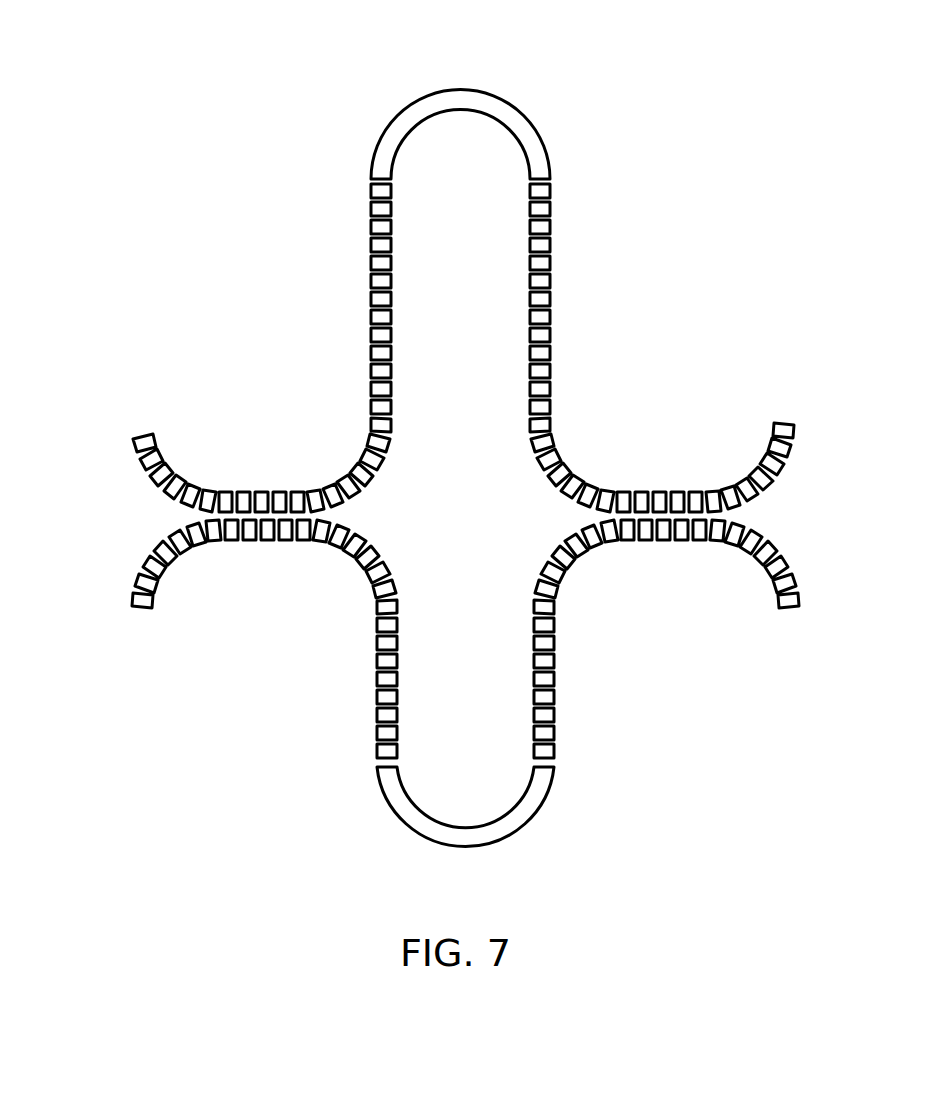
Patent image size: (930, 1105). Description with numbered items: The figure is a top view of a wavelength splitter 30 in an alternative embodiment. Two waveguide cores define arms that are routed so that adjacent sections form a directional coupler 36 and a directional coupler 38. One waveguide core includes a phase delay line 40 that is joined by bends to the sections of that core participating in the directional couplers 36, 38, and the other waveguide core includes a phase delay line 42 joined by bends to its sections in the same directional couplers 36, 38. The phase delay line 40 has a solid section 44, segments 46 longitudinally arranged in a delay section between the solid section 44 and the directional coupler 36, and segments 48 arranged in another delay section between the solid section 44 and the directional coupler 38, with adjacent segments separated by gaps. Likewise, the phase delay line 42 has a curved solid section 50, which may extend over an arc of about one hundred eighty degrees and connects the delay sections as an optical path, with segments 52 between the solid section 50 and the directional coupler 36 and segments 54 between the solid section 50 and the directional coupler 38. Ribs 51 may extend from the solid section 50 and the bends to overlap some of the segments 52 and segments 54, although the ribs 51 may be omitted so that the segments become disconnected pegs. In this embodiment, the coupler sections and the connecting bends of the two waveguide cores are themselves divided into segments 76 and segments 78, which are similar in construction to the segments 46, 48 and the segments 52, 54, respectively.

The wavelength splitter 30 is at (128, 92).
The phase delay line 40 is at (322, 202).
The solid section 44 is at (388, 147).
The segments 46 is at (385, 275).
The segments 48 is at (548, 275).
The directional coupler 36 is at (253, 468).
The directional coupler 38 is at (658, 478).
The segments 76 is at (292, 499).
The segments 78 is at (230, 530).
The phase delay line 42 is at (333, 740).
The solid section 50 is at (533, 805).
The ribs 51 is at (387, 628).
The segments 52 is at (387, 697).
The segments 54 is at (545, 698).